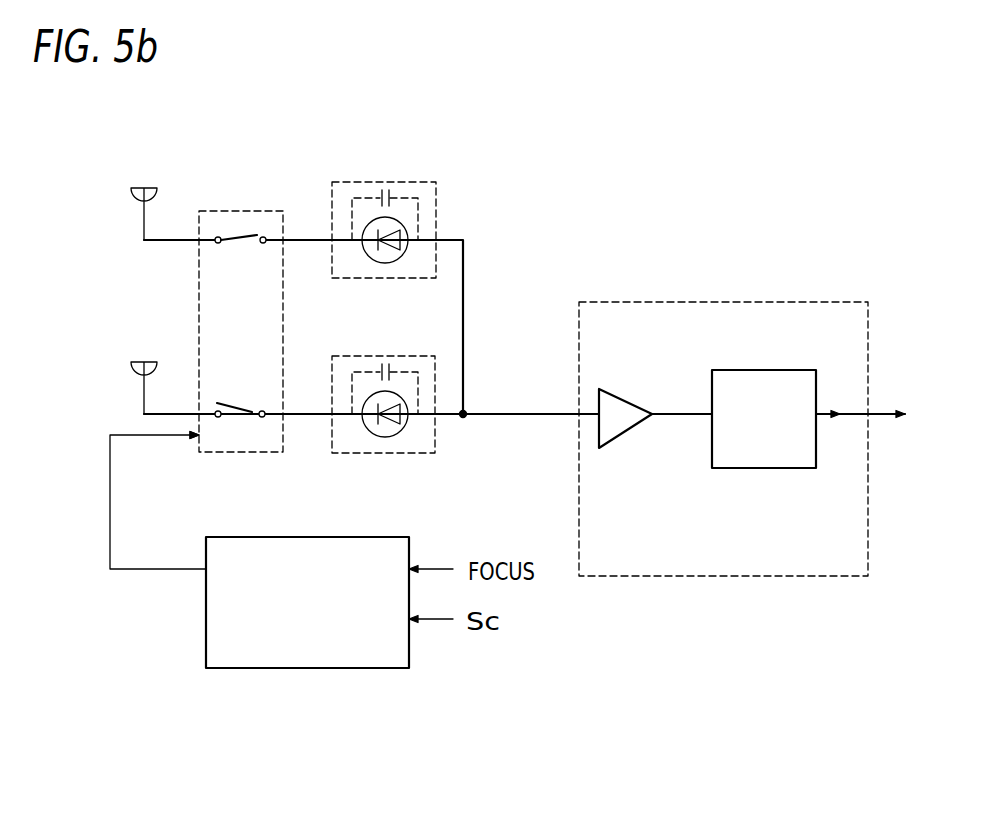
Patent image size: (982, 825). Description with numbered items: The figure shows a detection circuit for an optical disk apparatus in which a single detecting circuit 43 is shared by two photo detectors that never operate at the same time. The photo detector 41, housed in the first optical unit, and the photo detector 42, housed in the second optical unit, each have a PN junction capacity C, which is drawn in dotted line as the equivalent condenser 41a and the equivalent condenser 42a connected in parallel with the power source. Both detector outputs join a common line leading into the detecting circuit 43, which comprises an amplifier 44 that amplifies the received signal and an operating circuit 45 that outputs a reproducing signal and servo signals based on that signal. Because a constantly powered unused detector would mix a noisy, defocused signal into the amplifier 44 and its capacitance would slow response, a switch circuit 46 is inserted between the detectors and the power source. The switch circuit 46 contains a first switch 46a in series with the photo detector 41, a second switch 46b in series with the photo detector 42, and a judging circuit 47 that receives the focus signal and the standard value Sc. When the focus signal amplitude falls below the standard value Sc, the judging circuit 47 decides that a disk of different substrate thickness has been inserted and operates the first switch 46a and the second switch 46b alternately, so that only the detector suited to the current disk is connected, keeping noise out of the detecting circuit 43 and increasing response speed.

The photo detector 41 is at (437, 196).
The equivalent condenser 41a is at (380, 193).
The photo detector 42 is at (392, 453).
The equivalent condenser 42a is at (378, 368).
The detecting circuit 43 is at (750, 300).
The amplifier 44 is at (622, 400).
The operating circuit 45 is at (775, 369).
The switch circuit 46 is at (210, 452).
The first switch 46a is at (244, 234).
The second switch 46b is at (246, 419).
The judging circuit 47 is at (321, 684).